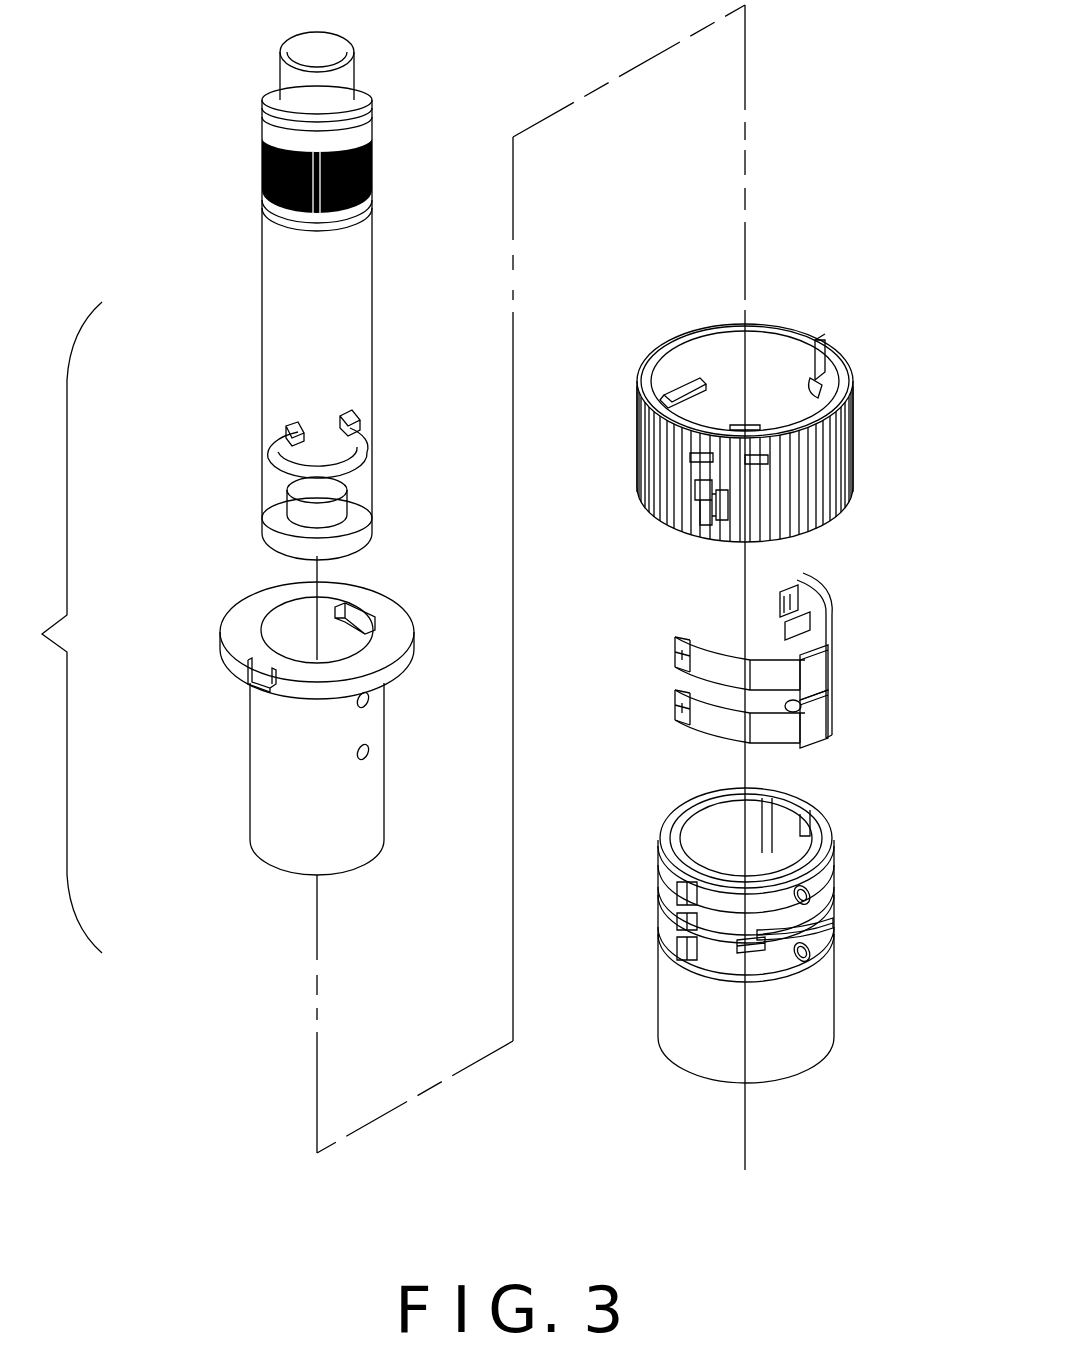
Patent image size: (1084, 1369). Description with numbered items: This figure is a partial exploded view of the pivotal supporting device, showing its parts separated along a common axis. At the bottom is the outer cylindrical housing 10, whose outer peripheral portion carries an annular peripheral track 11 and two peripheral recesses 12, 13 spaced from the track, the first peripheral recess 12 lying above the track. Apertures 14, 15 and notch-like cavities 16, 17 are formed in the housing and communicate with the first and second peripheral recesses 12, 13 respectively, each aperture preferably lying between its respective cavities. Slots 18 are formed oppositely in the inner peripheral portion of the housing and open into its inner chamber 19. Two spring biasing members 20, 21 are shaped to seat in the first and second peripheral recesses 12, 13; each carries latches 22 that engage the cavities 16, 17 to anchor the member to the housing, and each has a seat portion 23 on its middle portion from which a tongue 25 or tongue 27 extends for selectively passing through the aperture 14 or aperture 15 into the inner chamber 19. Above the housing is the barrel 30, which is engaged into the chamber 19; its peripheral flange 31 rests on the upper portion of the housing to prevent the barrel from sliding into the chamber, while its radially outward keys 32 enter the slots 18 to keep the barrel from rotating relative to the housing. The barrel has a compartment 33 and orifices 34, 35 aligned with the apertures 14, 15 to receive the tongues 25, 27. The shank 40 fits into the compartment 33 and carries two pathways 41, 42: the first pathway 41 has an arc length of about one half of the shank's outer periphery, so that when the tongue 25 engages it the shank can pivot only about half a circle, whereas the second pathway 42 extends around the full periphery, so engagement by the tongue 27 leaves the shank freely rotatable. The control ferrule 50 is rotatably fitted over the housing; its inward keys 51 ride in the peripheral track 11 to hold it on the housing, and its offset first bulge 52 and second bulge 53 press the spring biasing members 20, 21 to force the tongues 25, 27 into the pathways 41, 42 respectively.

The housing 10 is at (805, 1050).
The peripheral track 11 is at (767, 947).
The first peripheral recess 12 is at (830, 890).
The second peripheral recess 13 is at (685, 950).
The aperture 14 is at (835, 912).
The aperture 15 is at (805, 957).
The cavity 16 is at (686, 892).
The cavity 17 is at (676, 966).
The slot 18 is at (800, 820).
The chamber 19 is at (703, 845).
The first spring biasing member 20 is at (735, 665).
The second spring biasing member 21 is at (725, 740).
The latch 22 is at (678, 705).
The seat portion 23 is at (813, 715).
The tongue 25 is at (783, 648).
The tongue 27 is at (793, 705).
The barrel 30 is at (275, 812).
The peripheral flange 31 is at (240, 628).
The key 32 is at (275, 684).
The compartment 33 is at (288, 625).
The orifice 34 is at (368, 700).
The orifice 35 is at (365, 757).
The shank 40 is at (342, 268).
The first pathway 41 is at (365, 448).
The second pathway 42 is at (345, 522).
The control ferrule 50 is at (825, 467).
The key 51 is at (745, 427).
The first bulge 52 is at (820, 335).
The second bulge 53 is at (718, 512).